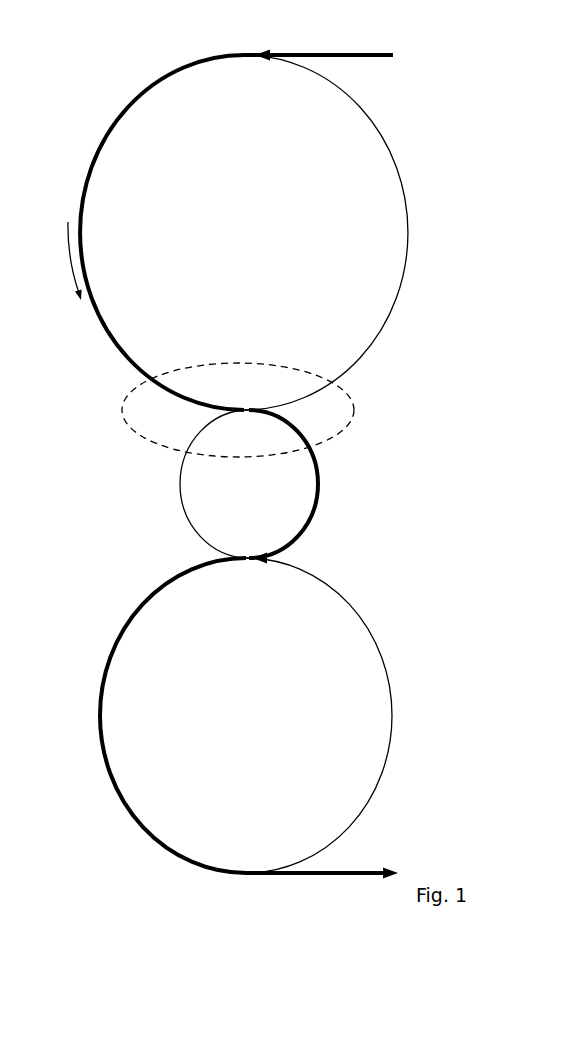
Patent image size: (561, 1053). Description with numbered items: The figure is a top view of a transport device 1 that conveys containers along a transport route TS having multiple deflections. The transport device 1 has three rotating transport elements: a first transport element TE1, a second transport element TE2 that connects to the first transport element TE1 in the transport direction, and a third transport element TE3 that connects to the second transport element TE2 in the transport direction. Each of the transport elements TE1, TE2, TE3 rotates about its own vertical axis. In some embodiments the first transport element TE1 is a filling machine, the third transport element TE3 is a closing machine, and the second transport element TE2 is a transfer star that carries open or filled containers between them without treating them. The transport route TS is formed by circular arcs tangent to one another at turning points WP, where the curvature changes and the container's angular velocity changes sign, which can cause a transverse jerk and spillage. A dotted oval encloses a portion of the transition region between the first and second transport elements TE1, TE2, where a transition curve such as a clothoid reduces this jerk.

The transport device 1 is at (447, 84).
The first transport element TE1 is at (408, 231).
The second transport element TE2 is at (182, 503).
The third transport element TE3 is at (392, 685).
The turning point WP is at (252, 396).
The transport route TS is at (63, 261).